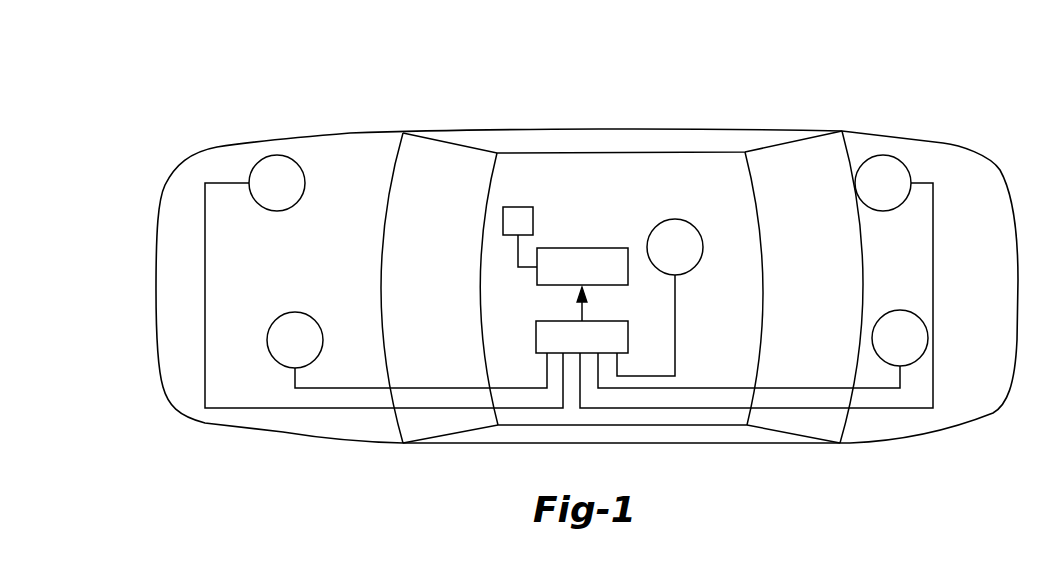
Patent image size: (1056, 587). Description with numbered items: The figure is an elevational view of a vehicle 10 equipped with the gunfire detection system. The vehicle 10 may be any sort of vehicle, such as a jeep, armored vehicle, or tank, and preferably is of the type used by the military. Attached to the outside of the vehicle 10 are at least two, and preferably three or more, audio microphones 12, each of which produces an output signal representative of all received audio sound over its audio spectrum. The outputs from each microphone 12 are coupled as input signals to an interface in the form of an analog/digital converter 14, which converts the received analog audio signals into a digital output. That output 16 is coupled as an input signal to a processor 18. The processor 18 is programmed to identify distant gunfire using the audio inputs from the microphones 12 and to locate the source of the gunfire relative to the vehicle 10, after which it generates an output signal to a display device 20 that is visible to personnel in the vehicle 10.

The vehicle 10 is at (778, 128).
The audio microphones 12 is at (569, 281).
The analog/digital (A/D) converter 14 is at (536, 337).
The output 16 is at (585, 320).
The processor 18 is at (580, 248).
The display device 20 is at (533, 220).